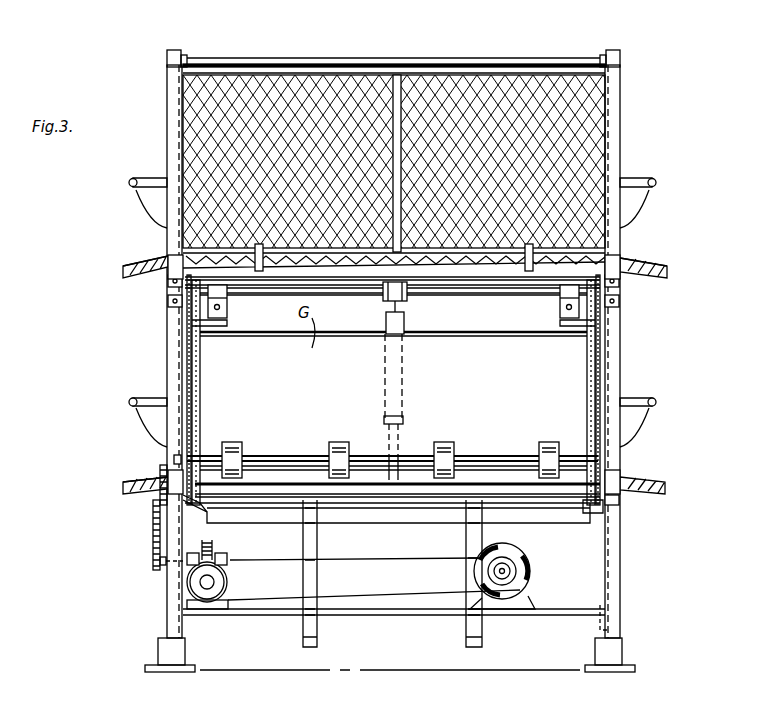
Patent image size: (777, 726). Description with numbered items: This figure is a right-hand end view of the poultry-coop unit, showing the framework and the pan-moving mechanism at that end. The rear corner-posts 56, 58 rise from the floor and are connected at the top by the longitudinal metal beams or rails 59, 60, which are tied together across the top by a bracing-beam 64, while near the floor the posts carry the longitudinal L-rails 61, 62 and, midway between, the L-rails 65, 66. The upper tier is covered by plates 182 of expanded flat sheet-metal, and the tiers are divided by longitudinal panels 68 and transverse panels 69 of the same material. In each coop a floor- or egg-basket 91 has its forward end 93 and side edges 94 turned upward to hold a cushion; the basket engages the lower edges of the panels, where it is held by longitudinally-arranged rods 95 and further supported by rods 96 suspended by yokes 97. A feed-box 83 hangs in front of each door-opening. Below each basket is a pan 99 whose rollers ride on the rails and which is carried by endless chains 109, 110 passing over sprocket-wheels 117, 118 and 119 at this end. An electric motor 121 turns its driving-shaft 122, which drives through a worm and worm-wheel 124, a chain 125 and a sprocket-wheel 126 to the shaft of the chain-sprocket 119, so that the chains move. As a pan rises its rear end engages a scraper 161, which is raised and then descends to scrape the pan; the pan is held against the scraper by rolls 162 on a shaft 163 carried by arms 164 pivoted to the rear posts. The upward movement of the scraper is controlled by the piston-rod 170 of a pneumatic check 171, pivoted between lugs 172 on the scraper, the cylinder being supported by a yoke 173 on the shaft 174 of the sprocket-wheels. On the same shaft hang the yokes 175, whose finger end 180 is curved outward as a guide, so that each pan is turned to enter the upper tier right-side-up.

The corner-post 56 is at (167, 150).
The corner-post 58 is at (620, 112).
The longitudinal metal beam or rail 59 is at (200, 44).
The longitudinal metal beam or rail 60 is at (603, 52).
The plate of expanded flat sheet-metal 182 is at (288, 58).
The bracing-beam 64 is at (512, 64).
The transverse panel 69 is at (330, 98).
The longitudinal panel 68 is at (397, 75).
The longitudinally-arranged rod 95 is at (402, 257).
The rod 96 is at (262, 263).
The yoke 97 is at (258, 290).
The pan 99 is at (485, 350).
The longitudinal L-rail 65 is at (175, 283).
The longitudinal L-rail 66 is at (612, 286).
The end of finger 180 is at (190, 322).
The sprocket-wheel 118 is at (612, 300).
The yoke 175 is at (227, 305).
The shaft 174 is at (335, 292).
The yoke 173 is at (403, 305).
The pneumatic check 171 is at (384, 378).
The piston-rod 170 is at (390, 440).
The lug 172 is at (405, 470).
The endless chain 109 is at (199, 380).
The endless chain 110 is at (588, 378).
The arm 164 is at (188, 378).
The shaft 163 is at (488, 456).
The roll 162 is at (232, 442).
The scraper 161 is at (447, 523).
The worm-wheel 124 is at (213, 546).
The driving-shaft 122 is at (503, 571).
The electric motor 121 is at (535, 575).
The feed-box 83 is at (150, 210).
The forward end of basket 93 is at (123, 269).
The side edge of basket 94 is at (145, 258).
The floor- or egg-basket 91 is at (168, 280).
The sprocket-wheel 126 is at (168, 460).
The sprocket-wheel 119 is at (160, 515).
The chain 125 is at (157, 530).
The longitudinal L-rail 61 is at (190, 505).
The longitudinal L-rail 62 is at (593, 513).
The sprocket-wheel 117 is at (605, 510).